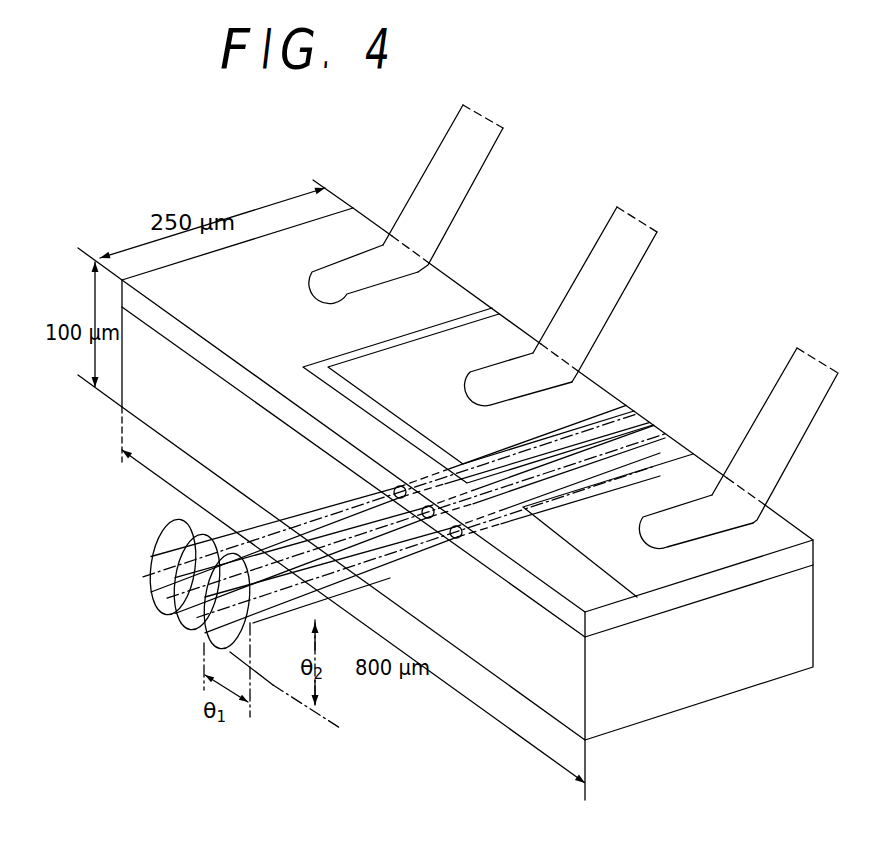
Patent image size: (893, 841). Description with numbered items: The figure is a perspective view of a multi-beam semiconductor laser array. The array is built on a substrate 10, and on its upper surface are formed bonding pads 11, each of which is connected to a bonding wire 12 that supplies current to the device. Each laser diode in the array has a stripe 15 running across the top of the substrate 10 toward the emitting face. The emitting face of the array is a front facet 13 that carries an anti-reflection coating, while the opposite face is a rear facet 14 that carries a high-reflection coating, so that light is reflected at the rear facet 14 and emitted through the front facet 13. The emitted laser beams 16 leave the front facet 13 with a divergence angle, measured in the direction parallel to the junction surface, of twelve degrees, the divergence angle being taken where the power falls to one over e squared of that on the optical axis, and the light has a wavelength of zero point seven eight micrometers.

The substrate 10 is at (557, 693).
The bonding pad 11 is at (428, 298).
The bonding wire 12 is at (471, 176).
The front facet with AR coating 13 is at (507, 567).
The rear facet with HR coating 14 is at (362, 228).
The stripe of a laser diode 15 is at (653, 447).
The laser beams 16 is at (212, 624).